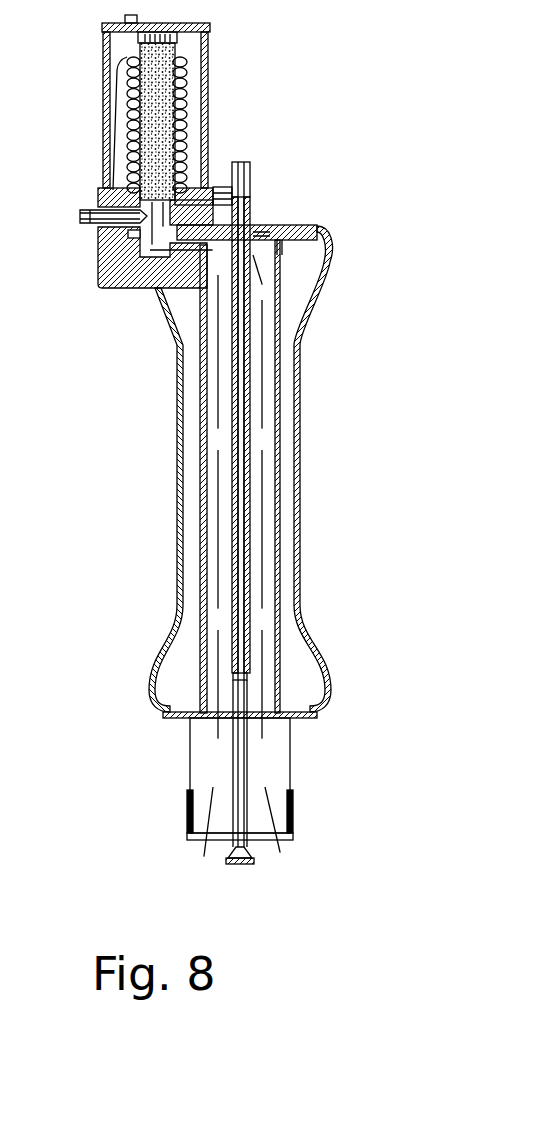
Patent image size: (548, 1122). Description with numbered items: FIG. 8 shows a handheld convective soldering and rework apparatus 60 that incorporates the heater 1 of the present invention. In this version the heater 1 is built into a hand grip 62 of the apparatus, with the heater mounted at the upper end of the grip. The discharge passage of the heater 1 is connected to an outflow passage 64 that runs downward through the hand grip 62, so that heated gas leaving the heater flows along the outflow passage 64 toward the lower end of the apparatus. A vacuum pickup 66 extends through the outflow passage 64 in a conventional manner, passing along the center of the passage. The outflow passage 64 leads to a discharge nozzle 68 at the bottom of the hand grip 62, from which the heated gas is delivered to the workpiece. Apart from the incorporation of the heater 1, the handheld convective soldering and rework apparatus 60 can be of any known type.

The heater 1 is at (97, 95).
The fluid treatment device 60 is at (400, 272).
The hand grip 62 is at (178, 340).
The outflow passage 64 is at (215, 512).
The vacuum pickup 66 is at (254, 210).
The discharge nozzle 68 is at (188, 755).